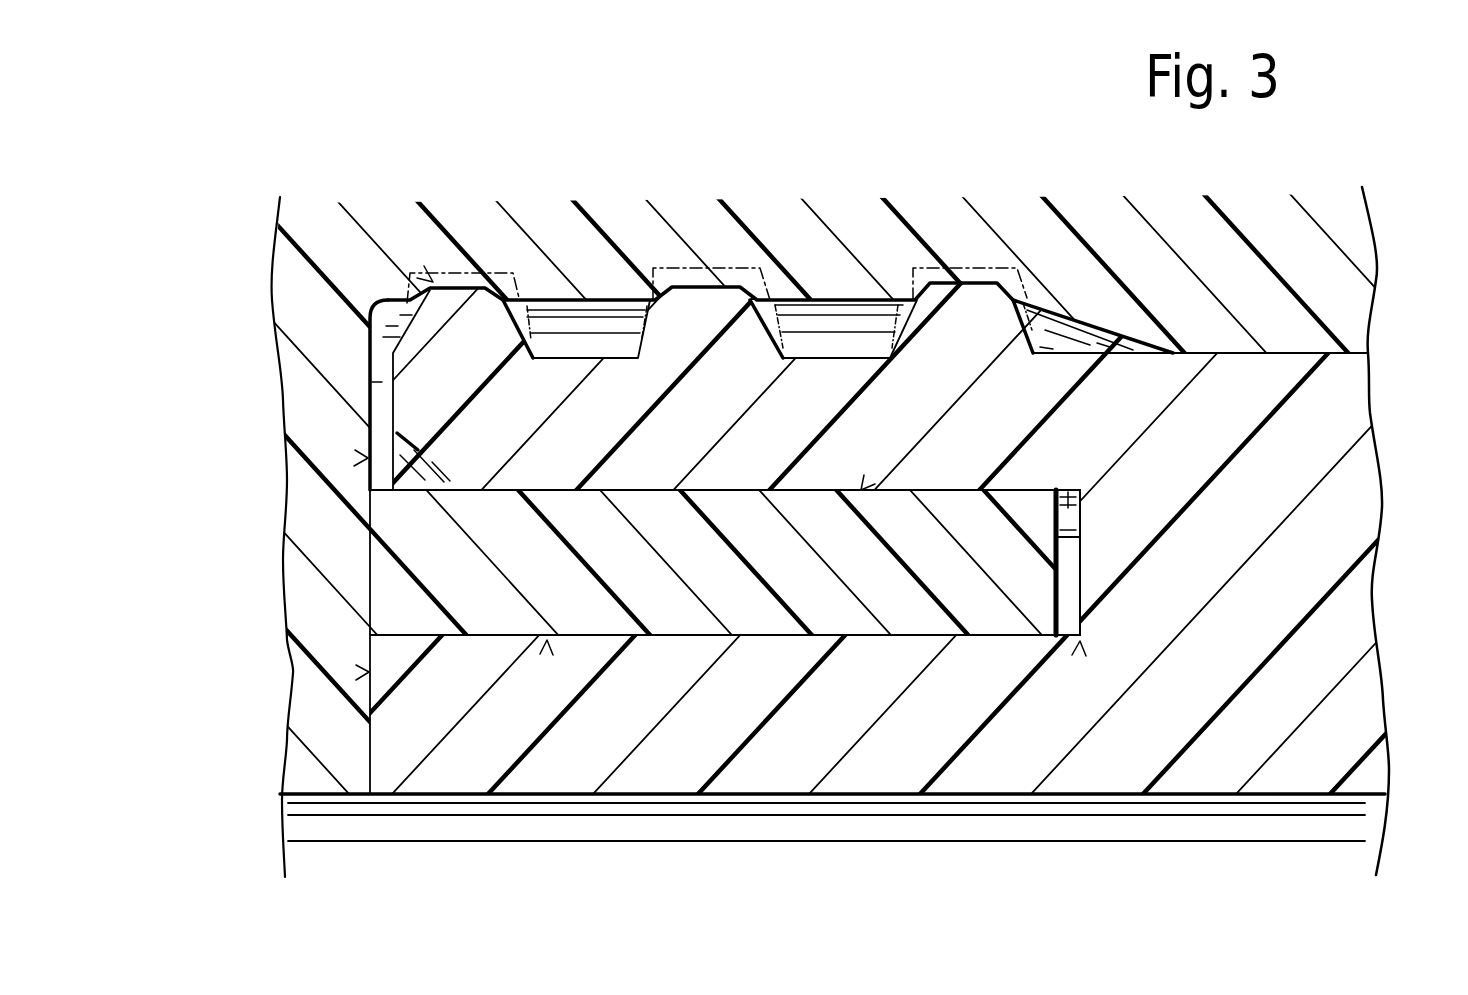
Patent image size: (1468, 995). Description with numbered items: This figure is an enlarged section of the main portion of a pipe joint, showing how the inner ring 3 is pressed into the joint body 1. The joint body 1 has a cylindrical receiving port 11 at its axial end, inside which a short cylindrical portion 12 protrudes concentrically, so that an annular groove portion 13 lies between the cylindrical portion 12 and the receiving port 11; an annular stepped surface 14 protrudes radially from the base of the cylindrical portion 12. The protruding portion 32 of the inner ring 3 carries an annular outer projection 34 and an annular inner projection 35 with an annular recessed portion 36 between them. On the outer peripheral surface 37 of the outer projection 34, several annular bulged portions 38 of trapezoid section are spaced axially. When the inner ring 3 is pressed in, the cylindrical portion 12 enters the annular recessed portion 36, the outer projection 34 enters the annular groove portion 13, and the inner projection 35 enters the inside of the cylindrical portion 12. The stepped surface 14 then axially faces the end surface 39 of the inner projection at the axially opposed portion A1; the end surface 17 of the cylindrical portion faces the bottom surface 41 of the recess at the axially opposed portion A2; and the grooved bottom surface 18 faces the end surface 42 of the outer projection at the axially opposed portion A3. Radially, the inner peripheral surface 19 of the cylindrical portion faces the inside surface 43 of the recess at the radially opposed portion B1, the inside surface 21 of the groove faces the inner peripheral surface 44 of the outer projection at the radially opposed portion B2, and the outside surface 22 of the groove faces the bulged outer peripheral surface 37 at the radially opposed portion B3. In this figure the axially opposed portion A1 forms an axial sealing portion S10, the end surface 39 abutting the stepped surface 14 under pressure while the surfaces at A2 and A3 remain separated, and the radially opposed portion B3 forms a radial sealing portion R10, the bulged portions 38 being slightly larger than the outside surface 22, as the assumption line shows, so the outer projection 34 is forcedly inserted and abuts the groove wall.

The joint body 1 is at (283, 403).
The inner ring 3 is at (1367, 614).
The receiving port 11 is at (1366, 290).
The cylindrical portion 12 is at (1070, 590).
The annular groove portion 13 is at (370, 410).
The stepped surface 14 is at (375, 770).
The end surface of the cylindrical portion 17 is at (1082, 530).
The grooved bottom surface 18 is at (370, 350).
The inner peripheral surface of the cylindrical portion 19 is at (683, 640).
The inside surface of the annular groove portion 21 is at (785, 490).
The outside surface of the annular groove portion 22 is at (818, 298).
The protruding portion 32 is at (1290, 356).
The outer projection 34 is at (583, 390).
The inner projection 35 is at (763, 783).
The annular recessed portion 36 is at (1085, 598).
The outer peripheral surface of the outer projection 37 is at (845, 357).
The bulged portions 38 is at (452, 288).
The end surface of the inner projection 39 is at (372, 748).
The bottom surface of the annular recessed portion 41 is at (1073, 490).
The end surface of the outer projection 42 is at (370, 382).
The inside surface of the annular recessed portion 43 is at (647, 637).
The inner peripheral surface of the outer projection 44 is at (652, 497).
The radially opposed portion B1 is at (547, 642).
The radially opposed portion B2 is at (862, 489).
The radially opposed portion B3 is at (380, 198).
The radial sealing portion R10 is at (430, 278).
The axially opposed portion A1 is at (260, 711).
The axial sealing portion S10 is at (368, 672).
The axially opposed portion A2 is at (1080, 643).
The axially opposed portion A3 is at (365, 458).